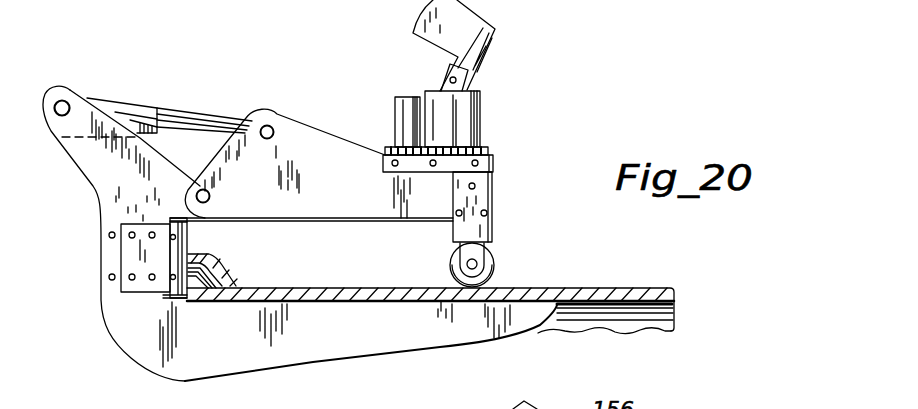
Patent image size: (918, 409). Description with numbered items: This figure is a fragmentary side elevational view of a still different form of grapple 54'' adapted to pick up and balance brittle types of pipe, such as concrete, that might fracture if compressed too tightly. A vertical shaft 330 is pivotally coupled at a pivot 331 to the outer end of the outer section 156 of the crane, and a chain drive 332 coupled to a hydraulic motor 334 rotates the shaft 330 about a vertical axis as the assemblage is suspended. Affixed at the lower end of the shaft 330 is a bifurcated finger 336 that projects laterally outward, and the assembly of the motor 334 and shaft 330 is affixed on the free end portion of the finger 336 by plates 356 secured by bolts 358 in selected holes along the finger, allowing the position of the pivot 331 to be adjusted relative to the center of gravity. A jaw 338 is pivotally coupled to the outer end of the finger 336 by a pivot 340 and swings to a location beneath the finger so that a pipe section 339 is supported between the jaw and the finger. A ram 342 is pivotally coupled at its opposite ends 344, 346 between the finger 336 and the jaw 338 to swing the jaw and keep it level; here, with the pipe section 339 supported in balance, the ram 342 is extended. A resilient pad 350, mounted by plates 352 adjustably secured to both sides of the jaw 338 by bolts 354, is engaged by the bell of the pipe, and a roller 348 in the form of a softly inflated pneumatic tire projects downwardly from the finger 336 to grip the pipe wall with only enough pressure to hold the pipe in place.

The end of ram 346 is at (62, 100).
The ram 342 is at (149, 107).
The end of ram 344 is at (268, 124).
The pivot 340 is at (210, 196).
The bifurcated finger 336 is at (305, 142).
The bolts 358 is at (311, 198).
The resilient pad 350 is at (188, 238).
The plates 352 is at (127, 290).
The bolts 354 is at (151, 231).
The plates 356 is at (215, 272).
The roller 348 is at (497, 266).
The pipe section 339 is at (597, 290).
The jaw 338 is at (306, 357).
The chain drive 332 is at (495, 154).
The vertical shaft 330 is at (482, 121).
The hydraulic motor 334 is at (400, 110).
The pivot 331 is at (465, 79).
The outer section 156 is at (413, 33).
The grapple 54'' is at (602, 123).